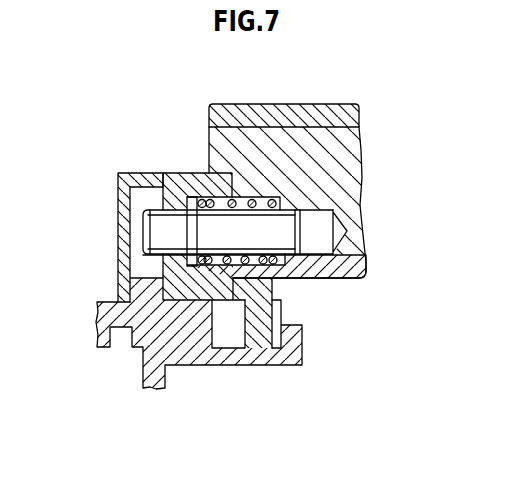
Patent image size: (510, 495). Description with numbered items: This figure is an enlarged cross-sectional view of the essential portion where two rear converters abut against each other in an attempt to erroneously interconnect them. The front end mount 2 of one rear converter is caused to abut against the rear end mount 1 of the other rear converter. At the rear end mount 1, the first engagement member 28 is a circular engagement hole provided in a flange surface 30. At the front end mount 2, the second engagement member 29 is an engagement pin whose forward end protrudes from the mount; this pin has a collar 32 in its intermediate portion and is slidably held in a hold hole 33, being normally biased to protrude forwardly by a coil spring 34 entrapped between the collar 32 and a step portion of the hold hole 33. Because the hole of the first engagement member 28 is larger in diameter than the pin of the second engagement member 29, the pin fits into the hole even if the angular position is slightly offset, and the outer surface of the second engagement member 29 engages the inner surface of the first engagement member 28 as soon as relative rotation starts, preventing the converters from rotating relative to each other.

The rear end mount 1 is at (178, 336).
The front end mount 2 is at (220, 292).
The first engagement member 28 is at (145, 193).
The second engagement member 29 is at (155, 233).
The flange surface 30 is at (166, 175).
The collar 32 is at (196, 233).
The hold hole 33 is at (348, 229).
The coil spring 34 is at (271, 276).